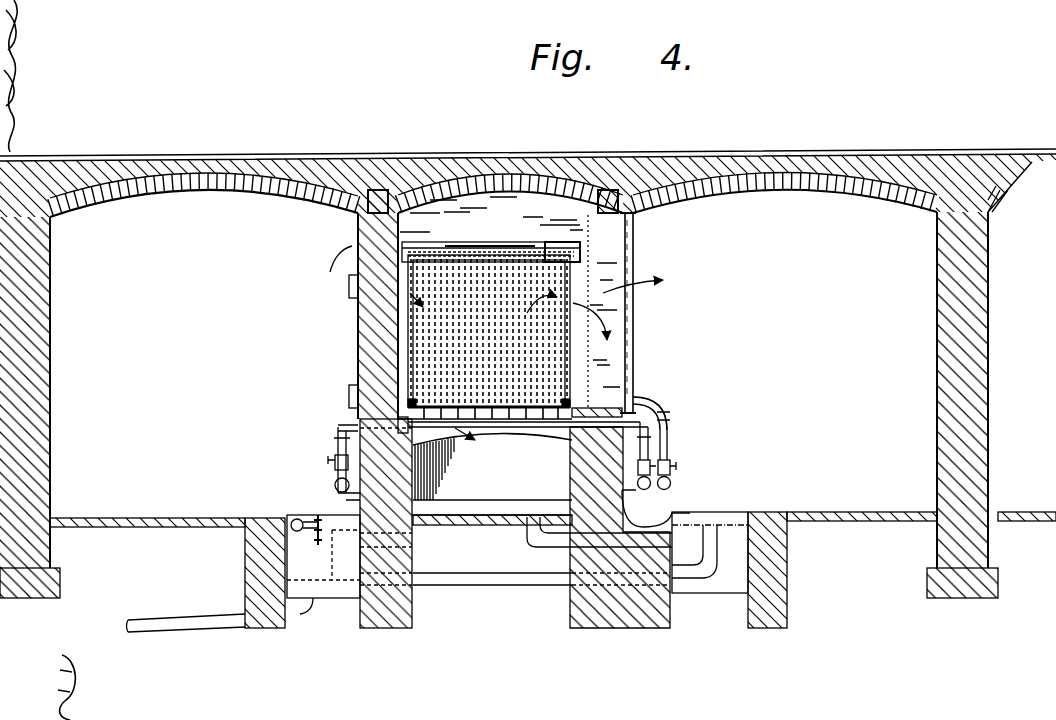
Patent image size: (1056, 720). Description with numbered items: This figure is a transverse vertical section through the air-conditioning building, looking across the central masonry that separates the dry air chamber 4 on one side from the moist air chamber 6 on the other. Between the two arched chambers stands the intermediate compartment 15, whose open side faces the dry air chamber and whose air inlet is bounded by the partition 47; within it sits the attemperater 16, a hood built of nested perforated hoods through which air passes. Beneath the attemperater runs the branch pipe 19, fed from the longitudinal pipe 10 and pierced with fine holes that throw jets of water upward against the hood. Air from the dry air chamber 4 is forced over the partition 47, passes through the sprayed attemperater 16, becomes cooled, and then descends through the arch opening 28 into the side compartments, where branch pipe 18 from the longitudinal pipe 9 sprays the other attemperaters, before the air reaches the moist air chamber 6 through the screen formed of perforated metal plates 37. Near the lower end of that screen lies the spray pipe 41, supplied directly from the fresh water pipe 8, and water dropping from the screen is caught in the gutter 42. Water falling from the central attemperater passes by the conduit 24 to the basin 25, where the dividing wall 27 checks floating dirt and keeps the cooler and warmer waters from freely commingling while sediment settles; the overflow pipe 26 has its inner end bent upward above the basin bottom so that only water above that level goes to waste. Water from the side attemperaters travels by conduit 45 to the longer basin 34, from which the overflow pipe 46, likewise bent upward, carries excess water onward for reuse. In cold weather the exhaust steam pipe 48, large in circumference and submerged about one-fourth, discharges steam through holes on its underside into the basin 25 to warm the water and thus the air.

The dry air chamber 4 is at (122, 407).
The moist air chamber 6 is at (921, 405).
The fresh water pipe 8 is at (671, 483).
The longitudinal pipe 9 is at (656, 508).
The longitudinal pipe 10 is at (335, 462).
The intermediate compartment 15 is at (455, 241).
The attemperater 16 is at (510, 242).
The branch pipe 18 is at (470, 427).
The branch pipe 19 is at (347, 424).
The conduit 24 is at (444, 510).
The basin 25 is at (323, 564).
The overflow pipe 26 is at (152, 632).
The dividing wall 27 is at (332, 518).
The arch opening 28 is at (492, 479).
The basin 34 is at (729, 570).
The perforated metal plates 37 is at (625, 369).
The spray pipe 41 is at (636, 399).
The gutter 42 is at (672, 500).
The conduit 45 is at (532, 546).
The overflow pipe 46 is at (494, 585).
The partition 47 is at (358, 344).
The exhaust steam pipe 48 is at (296, 518).